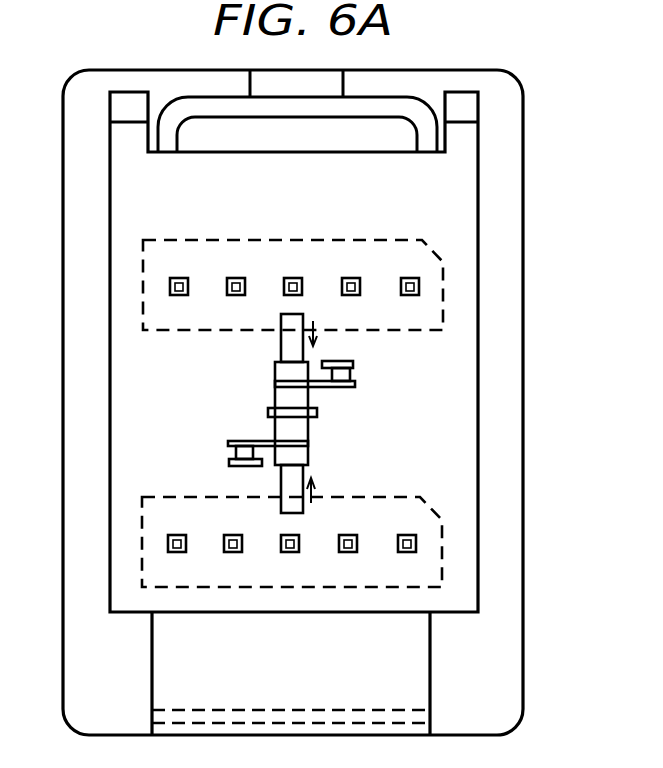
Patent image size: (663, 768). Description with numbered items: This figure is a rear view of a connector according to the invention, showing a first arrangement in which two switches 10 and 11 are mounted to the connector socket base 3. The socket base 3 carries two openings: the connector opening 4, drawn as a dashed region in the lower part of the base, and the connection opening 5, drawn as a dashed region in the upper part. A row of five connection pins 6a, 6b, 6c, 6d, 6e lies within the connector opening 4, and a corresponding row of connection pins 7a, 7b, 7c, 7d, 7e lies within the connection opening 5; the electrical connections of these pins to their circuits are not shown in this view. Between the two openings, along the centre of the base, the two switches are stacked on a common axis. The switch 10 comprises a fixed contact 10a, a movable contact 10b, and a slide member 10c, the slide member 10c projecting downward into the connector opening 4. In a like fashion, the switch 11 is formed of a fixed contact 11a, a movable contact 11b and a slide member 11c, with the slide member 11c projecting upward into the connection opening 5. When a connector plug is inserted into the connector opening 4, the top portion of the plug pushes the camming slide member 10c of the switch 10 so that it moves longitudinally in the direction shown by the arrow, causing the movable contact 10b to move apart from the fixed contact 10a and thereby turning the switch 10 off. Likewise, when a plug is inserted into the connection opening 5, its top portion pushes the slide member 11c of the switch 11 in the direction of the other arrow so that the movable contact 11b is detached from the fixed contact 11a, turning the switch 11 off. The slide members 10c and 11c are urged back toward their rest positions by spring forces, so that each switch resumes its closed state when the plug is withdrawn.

The connector socket base 3 is at (523, 98).
The connector opening 4 is at (442, 520).
The connection opening 5 is at (443, 285).
The connection pin 6a is at (407, 552).
The connection pin 6b is at (348, 552).
The connection pin 6c is at (290, 552).
The connection pin 6d is at (233, 552).
The connection pin 6e is at (177, 552).
The connection pin 7a is at (410, 278).
The connection pin 7b is at (351, 278).
The connection pin 7c is at (293, 278).
The connection pin 7d is at (236, 278).
The connection pin 7e is at (179, 278).
The switch 10 is at (200, 438).
The fixed contact 10a is at (244, 470).
The movable contact 10b is at (250, 438).
The slide member 10c is at (285, 505).
The switch 11 is at (422, 406).
The fixed contact 11a is at (334, 366).
The movable contact 11b is at (336, 388).
The slide member 11c is at (293, 322).